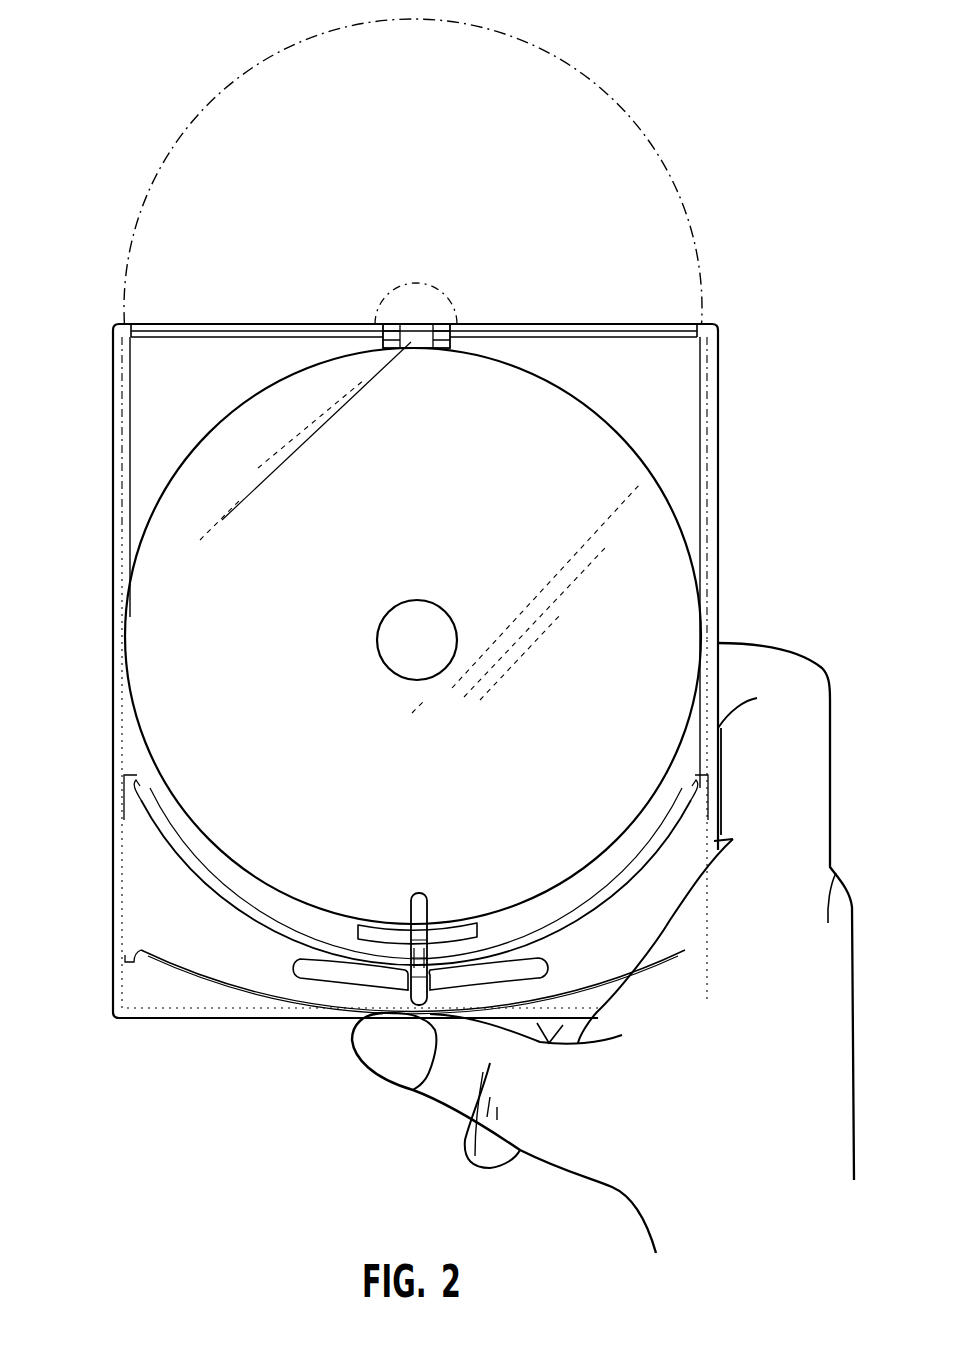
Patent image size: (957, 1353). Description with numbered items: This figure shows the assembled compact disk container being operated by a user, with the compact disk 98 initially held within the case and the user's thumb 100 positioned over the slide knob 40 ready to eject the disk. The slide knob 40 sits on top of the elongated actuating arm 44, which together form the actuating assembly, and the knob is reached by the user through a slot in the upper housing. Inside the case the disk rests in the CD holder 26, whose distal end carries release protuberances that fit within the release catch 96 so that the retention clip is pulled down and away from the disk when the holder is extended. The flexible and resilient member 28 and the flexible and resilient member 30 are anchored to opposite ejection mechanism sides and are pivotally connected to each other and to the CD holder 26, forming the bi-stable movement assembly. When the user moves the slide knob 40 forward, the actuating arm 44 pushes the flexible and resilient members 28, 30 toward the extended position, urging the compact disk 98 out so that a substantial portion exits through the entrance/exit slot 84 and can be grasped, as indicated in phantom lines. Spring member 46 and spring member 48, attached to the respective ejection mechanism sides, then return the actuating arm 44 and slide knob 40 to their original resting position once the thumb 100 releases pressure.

The entrance/exit slot 84 is at (170, 323).
The release catch 96 is at (458, 322).
The compact disk 98 is at (530, 478).
The flexible and resilient member 30 is at (212, 882).
The flexible and resilient member 28 is at (595, 908).
The CD holder 26 is at (354, 933).
The spring member 46 is at (174, 968).
The actuating arm 44 is at (322, 976).
The slide knob 40 is at (405, 988).
The spring member 48 is at (598, 993).
The thumb 100 is at (430, 1067).